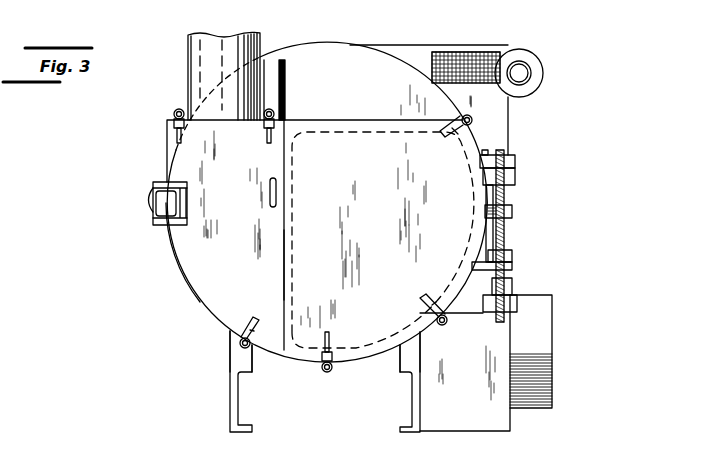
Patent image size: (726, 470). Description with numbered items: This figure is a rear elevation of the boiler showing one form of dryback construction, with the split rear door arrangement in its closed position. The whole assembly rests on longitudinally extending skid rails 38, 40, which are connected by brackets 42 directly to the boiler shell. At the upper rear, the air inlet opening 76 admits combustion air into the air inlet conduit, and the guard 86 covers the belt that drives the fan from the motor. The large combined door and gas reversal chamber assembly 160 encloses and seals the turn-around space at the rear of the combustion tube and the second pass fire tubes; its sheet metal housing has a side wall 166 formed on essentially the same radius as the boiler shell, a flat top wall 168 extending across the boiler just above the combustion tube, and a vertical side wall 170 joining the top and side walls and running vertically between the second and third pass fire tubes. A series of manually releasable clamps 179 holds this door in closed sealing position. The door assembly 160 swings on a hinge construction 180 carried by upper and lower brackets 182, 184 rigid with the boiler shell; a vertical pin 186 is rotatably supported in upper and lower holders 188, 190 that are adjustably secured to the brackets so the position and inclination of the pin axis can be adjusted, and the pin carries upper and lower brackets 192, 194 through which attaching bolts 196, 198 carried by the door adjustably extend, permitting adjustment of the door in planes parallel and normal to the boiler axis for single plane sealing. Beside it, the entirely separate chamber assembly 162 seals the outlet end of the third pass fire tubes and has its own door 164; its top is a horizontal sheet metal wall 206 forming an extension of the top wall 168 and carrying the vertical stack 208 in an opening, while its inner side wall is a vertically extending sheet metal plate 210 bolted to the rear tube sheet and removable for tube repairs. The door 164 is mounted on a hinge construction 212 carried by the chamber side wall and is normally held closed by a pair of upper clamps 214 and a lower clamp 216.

The skid rail 38 is at (400, 397).
The skid rail 40 is at (235, 391).
The brackets 42 is at (238, 356).
The air inlet opening 76 is at (465, 55).
The guard 86 is at (545, 343).
The combined door and gas reversal chamber assembly 160 is at (366, 222).
The chamber assembly 162 is at (174, 249).
The door 164 is at (203, 290).
The side wall 166 is at (444, 326).
The top wall 168 is at (355, 119).
The vertical side wall 170 is at (281, 229).
The clamps 179 is at (471, 121).
The hinge construction 180 is at (502, 233).
The upper bracket 182 is at (515, 158).
The lower bracket 184 is at (512, 283).
The vertical pin 186 is at (502, 233).
The upper holder 188 is at (515, 176).
The lower holder 190 is at (514, 304).
The upper bracket 192 is at (486, 210).
The lower bracket 194 is at (466, 270).
The attaching bolt 196 is at (498, 210).
The attaching bolt 198 is at (505, 260).
The horizontal sheet metal wall 206 is at (262, 118).
The vertical stack 208 is at (262, 45).
The vertically extending sheet metal plate 210 is at (287, 282).
The hinge construction 212 is at (151, 212).
The upper clamps 214 is at (185, 137).
The lower clamp 216 is at (250, 318).